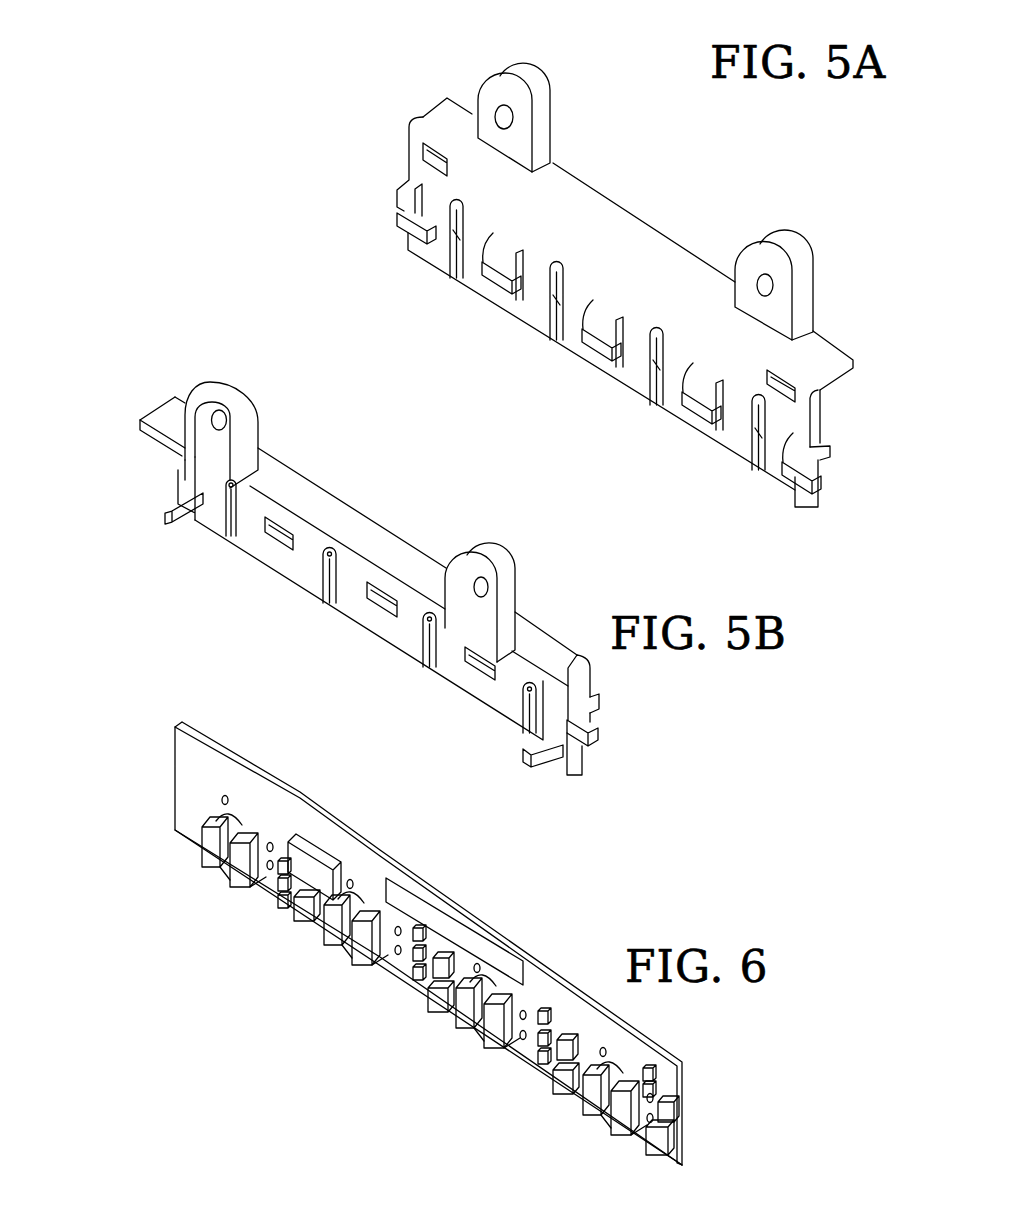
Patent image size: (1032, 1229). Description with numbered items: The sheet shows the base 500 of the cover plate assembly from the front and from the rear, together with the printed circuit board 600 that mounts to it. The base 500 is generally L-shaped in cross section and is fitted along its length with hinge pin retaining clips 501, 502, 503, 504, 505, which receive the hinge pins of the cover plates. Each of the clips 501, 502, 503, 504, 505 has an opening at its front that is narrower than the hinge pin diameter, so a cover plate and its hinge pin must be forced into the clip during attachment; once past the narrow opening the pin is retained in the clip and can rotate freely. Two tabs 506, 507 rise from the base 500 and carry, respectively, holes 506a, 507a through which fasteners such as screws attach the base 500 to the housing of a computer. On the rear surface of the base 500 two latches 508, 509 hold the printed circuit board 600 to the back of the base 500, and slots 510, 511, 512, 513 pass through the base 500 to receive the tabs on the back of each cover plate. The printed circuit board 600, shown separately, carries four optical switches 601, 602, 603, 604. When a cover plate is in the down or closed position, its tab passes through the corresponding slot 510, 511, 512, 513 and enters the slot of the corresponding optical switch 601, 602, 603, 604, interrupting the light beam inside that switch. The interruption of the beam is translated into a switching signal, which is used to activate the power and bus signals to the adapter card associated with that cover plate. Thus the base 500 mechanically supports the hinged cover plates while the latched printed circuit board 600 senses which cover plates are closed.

In FIG. 5A, the base 500 is at (431, 113).
In FIG. 5B, the base 500 is at (158, 406).
In FIG. 5A, the hinge pin retaining clip 501 is at (404, 212).
In FIG. 5B, the hinge pin retaining clip 501 is at (602, 728).
In FIG. 5A, the hinge pin retaining clip 502 is at (486, 283).
In FIG. 5A, the hinge pin retaining clip 503 is at (592, 357).
In FIG. 5A, the hinge pin retaining clip 504 is at (697, 427).
In FIG. 5A, the hinge pin retaining clip 505 is at (794, 484).
In FIG. 5A, the tab 506 is at (530, 80).
In FIG. 5B, the tab 506 is at (511, 567).
In FIG. 5A, the hole 506a is at (513, 119).
In FIG. 5B, the hole 506a is at (462, 578).
In FIG. 5A, the tab 507 is at (795, 258).
In FIG. 5B, the tab 507 is at (241, 387).
In FIG. 5A, the hole 507a is at (774, 292).
In FIG. 5B, the hole 507a is at (212, 423).
In FIG. 5B, the latch 508 is at (548, 765).
In FIG. 5A, the latch 509 is at (866, 460).
In FIG. 5B, the latch 509 is at (200, 524).
In FIG. 5A, the slot 510 is at (456, 248).
In FIG. 5B, the slot 510 is at (532, 714).
In FIG. 5A, the slot 511 is at (552, 315).
In FIG. 5B, the slot 511 is at (427, 660).
In FIG. 5A, the slot 512 is at (657, 378).
In FIG. 5B, the slot 512 is at (330, 600).
In FIG. 5A, the slot 513 is at (760, 448).
In FIG. 5B, the slot 513 is at (230, 530).
In FIG. 6, the printed circuit board 600 is at (182, 720).
In FIG. 6, the optical switch 601 is at (218, 878).
In FIG. 6, the optical switch 602 is at (350, 963).
In FIG. 6, the optical switch 603 is at (470, 1048).
In FIG. 6, the optical switch 604 is at (593, 1118).